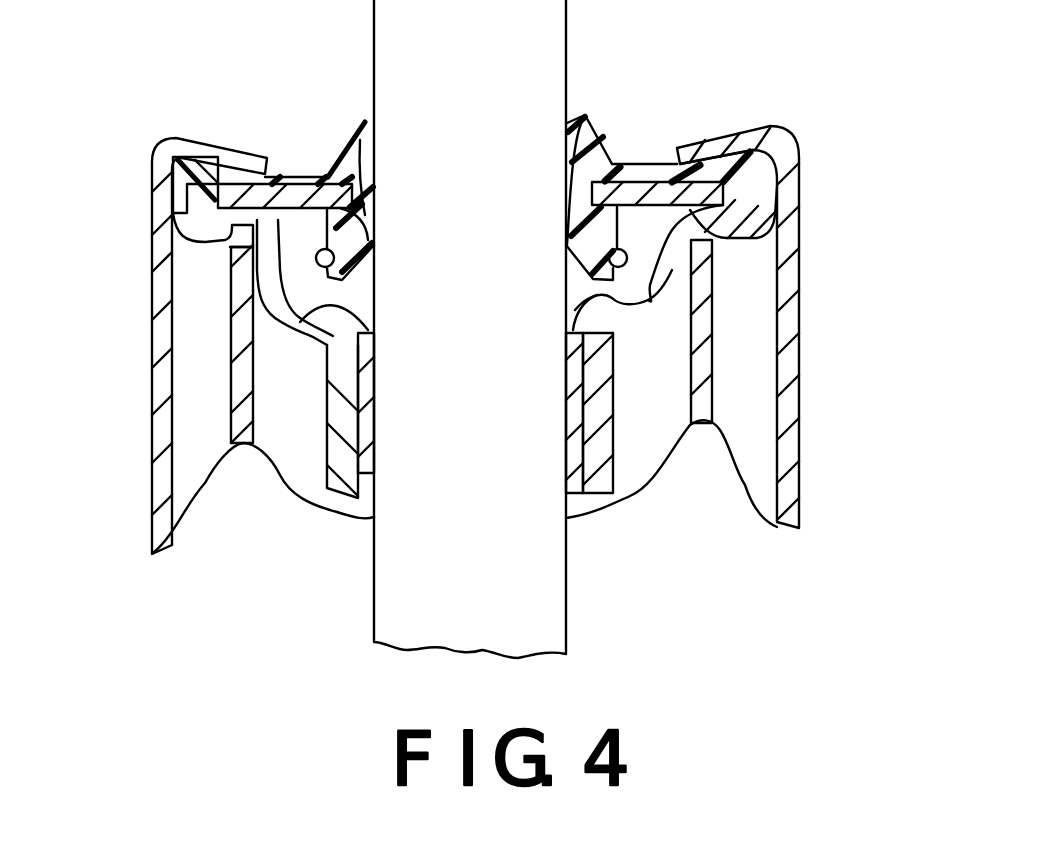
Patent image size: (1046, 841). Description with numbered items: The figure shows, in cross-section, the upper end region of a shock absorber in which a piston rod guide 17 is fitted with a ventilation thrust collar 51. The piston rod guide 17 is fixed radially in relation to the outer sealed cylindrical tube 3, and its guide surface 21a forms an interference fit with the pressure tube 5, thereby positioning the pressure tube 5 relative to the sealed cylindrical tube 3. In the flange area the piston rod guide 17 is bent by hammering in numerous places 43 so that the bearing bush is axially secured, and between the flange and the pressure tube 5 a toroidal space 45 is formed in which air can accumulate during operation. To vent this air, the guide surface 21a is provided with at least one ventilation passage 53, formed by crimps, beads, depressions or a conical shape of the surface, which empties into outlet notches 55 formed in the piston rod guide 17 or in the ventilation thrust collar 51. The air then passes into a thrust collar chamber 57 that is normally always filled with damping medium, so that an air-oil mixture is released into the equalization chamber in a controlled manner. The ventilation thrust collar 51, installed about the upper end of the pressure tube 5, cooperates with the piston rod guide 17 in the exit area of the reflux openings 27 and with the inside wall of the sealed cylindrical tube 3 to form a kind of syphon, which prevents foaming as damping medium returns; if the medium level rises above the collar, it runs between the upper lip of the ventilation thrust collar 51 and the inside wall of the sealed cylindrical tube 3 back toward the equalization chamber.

The sealed cylindrical tube 3 is at (790, 478).
The pressure tube 5 is at (247, 430).
The piston rod guide 17 is at (757, 193).
The guide surface 21a is at (250, 310).
The reflux openings 27 is at (213, 205).
The hammered places 43 is at (337, 492).
The toroidal space 45 is at (672, 388).
The ventilation thrust collar 51 is at (778, 258).
The ventilation passage 53 is at (262, 313).
The outlet notches 55 is at (187, 237).
The thrust collar chamber 57 is at (183, 237).